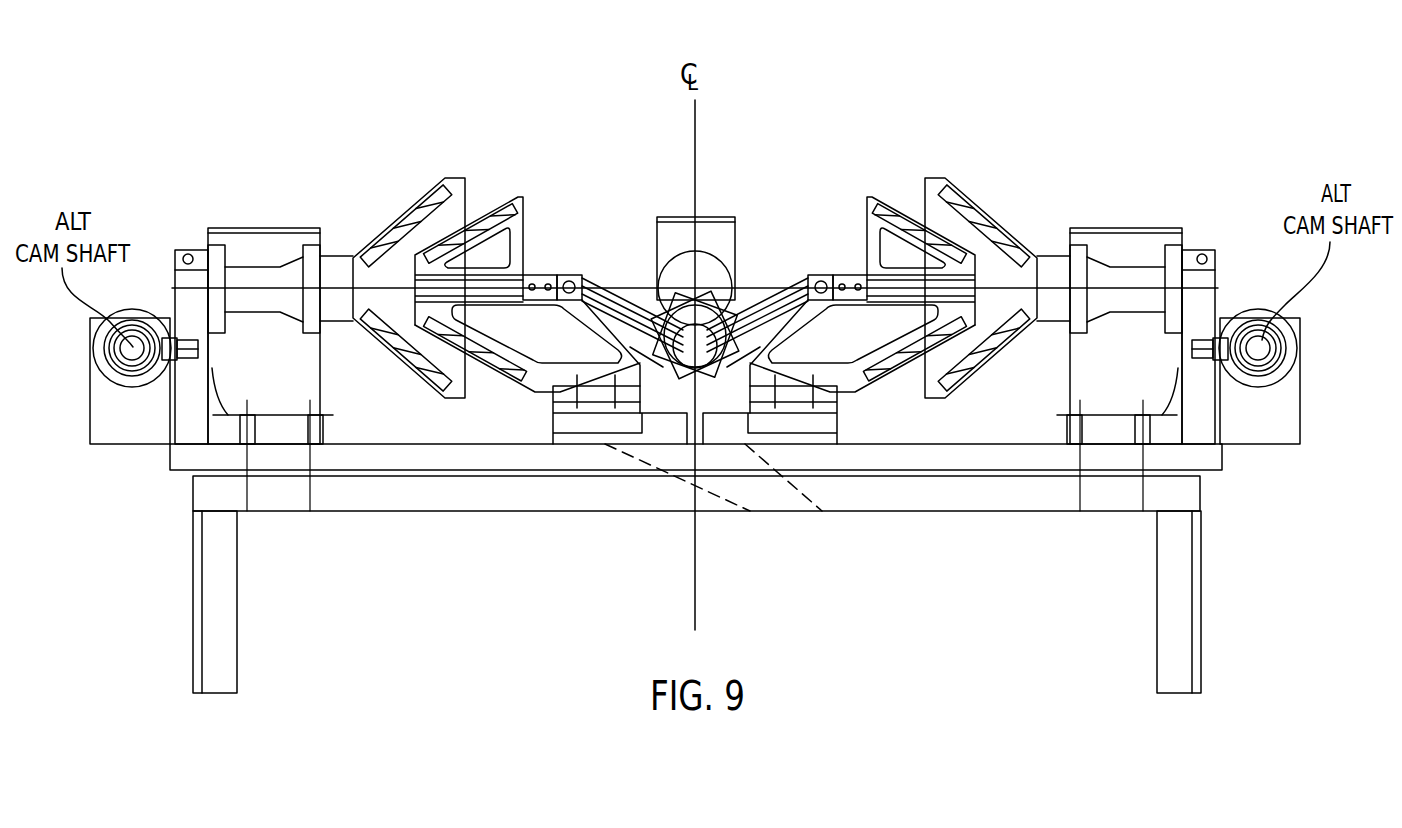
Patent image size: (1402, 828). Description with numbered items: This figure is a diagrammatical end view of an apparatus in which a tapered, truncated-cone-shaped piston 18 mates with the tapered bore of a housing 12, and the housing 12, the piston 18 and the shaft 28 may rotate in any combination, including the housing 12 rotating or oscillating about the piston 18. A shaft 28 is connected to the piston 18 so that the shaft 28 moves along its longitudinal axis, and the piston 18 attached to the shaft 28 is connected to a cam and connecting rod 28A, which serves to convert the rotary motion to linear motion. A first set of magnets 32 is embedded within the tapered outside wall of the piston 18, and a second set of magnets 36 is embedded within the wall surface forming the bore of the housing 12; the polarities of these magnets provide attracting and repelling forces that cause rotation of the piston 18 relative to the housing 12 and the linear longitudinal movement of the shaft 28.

The housing 12 is at (393, 373).
The piston 18 is at (520, 197).
The shaft 28 is at (610, 302).
The connecting rod 28A is at (700, 300).
The first set of magnets 32 is at (493, 213).
The second set of magnets 36 is at (422, 390).